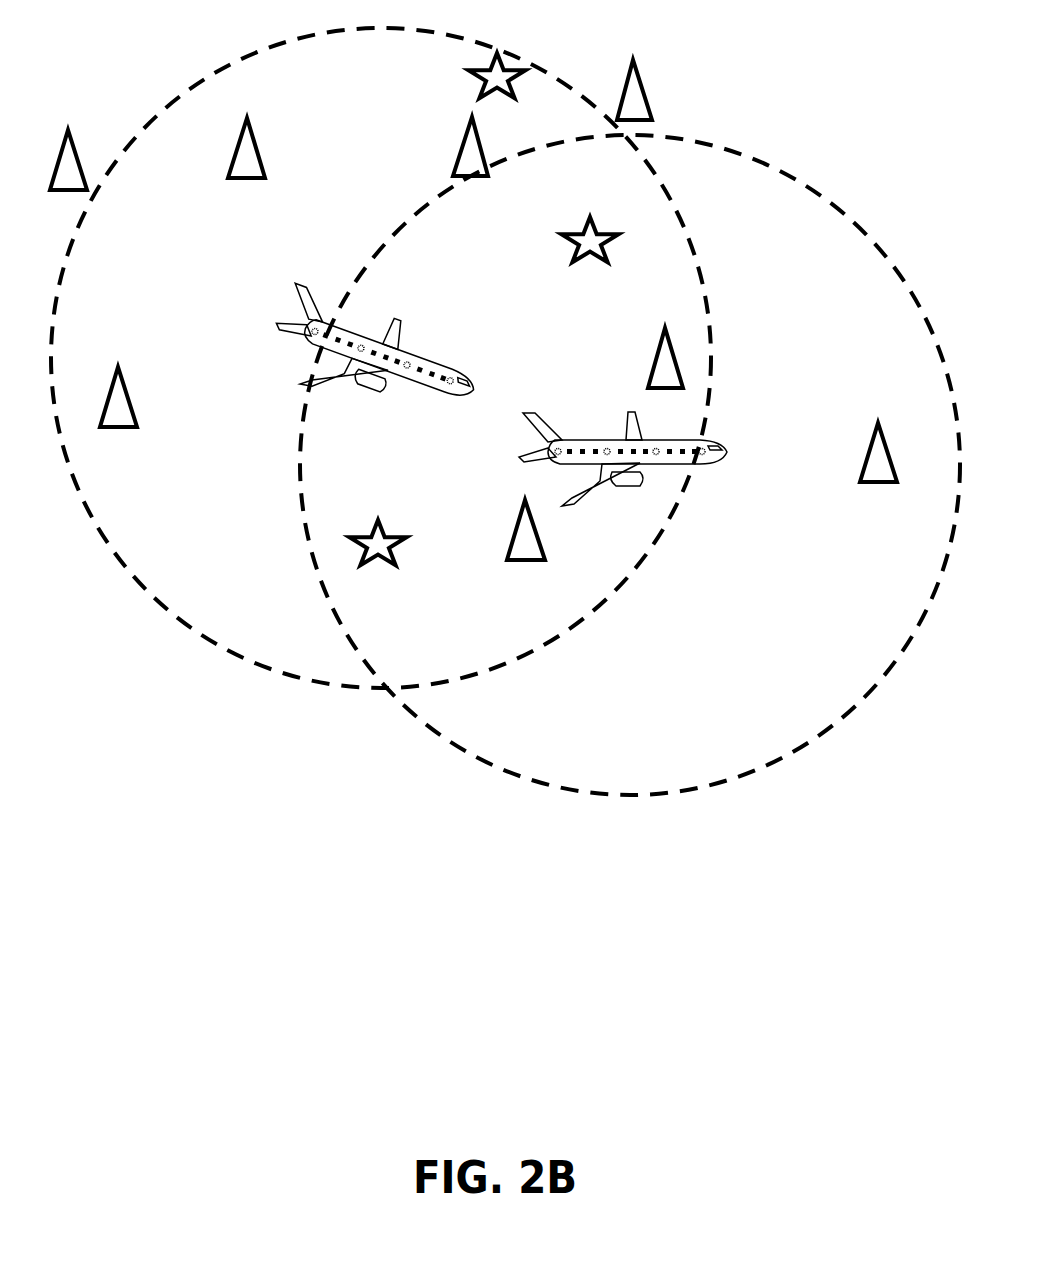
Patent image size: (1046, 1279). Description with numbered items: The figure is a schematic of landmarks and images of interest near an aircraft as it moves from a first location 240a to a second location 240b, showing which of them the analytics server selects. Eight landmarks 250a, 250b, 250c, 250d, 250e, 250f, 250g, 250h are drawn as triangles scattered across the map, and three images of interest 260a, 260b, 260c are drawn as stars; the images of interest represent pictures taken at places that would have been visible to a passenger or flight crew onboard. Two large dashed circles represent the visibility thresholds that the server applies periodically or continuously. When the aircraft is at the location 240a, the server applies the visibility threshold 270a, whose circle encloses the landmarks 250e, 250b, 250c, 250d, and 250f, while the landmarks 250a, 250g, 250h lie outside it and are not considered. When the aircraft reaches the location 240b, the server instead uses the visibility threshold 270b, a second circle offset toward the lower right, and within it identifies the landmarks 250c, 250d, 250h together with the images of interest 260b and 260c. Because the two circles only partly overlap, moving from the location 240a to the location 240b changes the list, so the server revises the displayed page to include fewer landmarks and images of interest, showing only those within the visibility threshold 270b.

The location of aircraft 240a is at (374, 360).
The location of aircraft 240b is at (650, 459).
The landmark 250a is at (658, 90).
The landmark 250b is at (491, 146).
The landmark 250c is at (644, 355).
The landmark 250d is at (529, 545).
The landmark 250e is at (253, 131).
The landmark 250f is at (135, 388).
The landmark 250g is at (65, 143).
The landmark 250h is at (874, 435).
The image of interest 260a is at (477, 70).
The image of interest 260b is at (387, 533).
The image of interest 260c is at (592, 228).
The visibility threshold 270a is at (381, 358).
The visibility threshold 270b is at (630, 465).